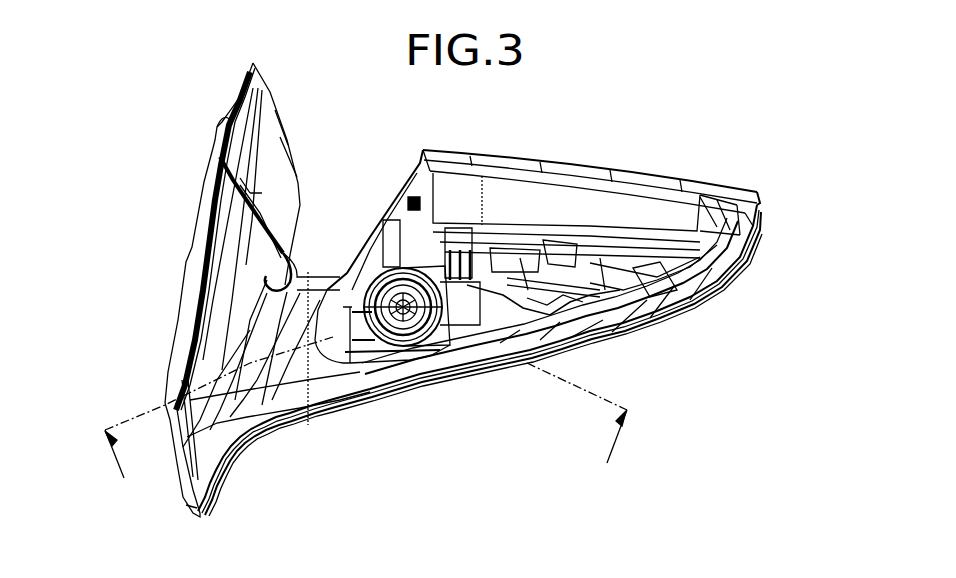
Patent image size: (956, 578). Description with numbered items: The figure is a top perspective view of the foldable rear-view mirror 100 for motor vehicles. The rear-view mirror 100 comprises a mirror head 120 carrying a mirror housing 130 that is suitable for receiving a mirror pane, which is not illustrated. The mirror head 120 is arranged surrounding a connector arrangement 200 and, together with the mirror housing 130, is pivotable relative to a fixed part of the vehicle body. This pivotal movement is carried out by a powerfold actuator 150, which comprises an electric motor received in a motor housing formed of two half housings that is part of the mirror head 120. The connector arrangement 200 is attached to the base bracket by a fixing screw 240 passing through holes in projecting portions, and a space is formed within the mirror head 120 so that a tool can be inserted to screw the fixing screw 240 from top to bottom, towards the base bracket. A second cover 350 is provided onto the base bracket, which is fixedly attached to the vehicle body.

The rear-view mirror 100 is at (170, 151).
The mirror head 120 is at (620, 162).
The mirror housing 130 is at (722, 186).
The powerfold actuator 150 is at (372, 232).
The connector arrangement 200 is at (425, 365).
The fixing screw 240 is at (358, 340).
The second cover 350 is at (223, 300).